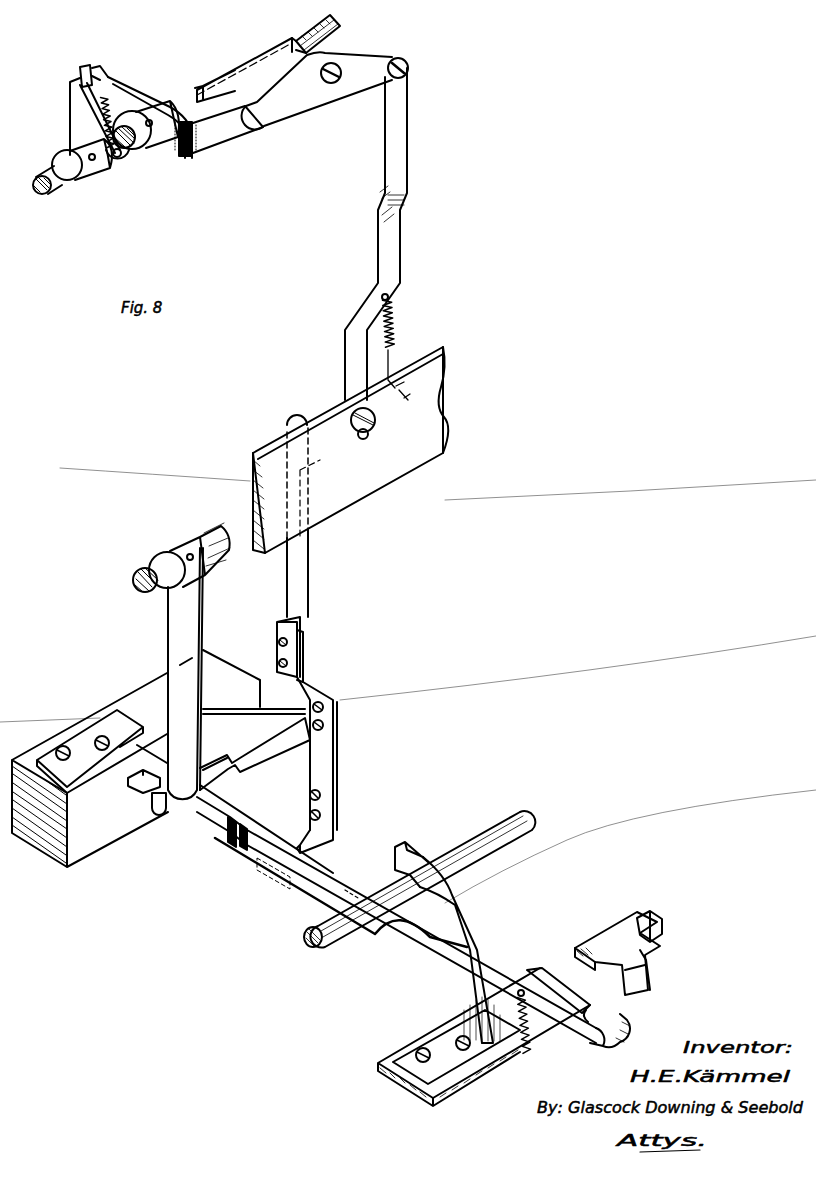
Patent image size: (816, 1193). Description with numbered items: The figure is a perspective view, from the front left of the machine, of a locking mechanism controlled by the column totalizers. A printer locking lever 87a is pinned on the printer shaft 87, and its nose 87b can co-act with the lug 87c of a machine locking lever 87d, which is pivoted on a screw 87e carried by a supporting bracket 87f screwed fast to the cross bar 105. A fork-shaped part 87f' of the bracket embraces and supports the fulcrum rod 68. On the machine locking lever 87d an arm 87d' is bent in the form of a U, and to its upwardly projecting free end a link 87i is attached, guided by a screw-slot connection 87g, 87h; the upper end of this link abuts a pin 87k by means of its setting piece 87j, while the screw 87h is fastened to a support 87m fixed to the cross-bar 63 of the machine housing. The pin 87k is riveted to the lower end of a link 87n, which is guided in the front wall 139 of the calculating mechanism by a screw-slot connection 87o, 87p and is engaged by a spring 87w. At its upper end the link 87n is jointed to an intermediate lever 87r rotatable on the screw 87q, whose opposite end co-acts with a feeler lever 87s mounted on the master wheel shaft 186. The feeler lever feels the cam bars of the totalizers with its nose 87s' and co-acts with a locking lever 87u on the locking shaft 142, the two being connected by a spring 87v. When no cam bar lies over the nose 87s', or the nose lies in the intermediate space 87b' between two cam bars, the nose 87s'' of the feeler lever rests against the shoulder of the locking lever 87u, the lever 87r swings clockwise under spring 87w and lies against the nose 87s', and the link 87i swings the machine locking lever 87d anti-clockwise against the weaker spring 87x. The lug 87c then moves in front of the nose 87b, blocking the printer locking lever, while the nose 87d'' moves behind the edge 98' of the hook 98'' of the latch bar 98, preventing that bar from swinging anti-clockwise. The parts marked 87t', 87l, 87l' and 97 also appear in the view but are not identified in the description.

The locking shaft 142 is at (60, 190).
The locking lever 87u is at (78, 143).
The tab 87t' is at (74, 58).
The nose of the feeler lever 87s'' is at (101, 58).
The spring 87v is at (113, 116).
The master wheel shaft 186 is at (130, 149).
The feeler lever 87s is at (180, 161).
The intermediate lever 87r is at (260, 119).
The nose of the feeler lever 87s' is at (243, 64).
The knob 87l is at (350, 34).
The knob base 87l' is at (340, 43).
The intermediate space 87b' is at (317, 104).
The screw 87q is at (333, 83).
The link 87n is at (398, 238).
The spring 87w is at (393, 334).
The front wall of the calculating mechanism 139 is at (437, 388).
The screw-slot connection 87p is at (376, 420).
The screw-slot connection 87o is at (368, 434).
The printer shaft 87 is at (140, 570).
The printer locking lever 87a is at (186, 623).
The pin 87k is at (303, 618).
The setting piece 87j is at (304, 649).
The link 87i is at (329, 689).
The screw-slot connection 87g is at (324, 706).
The screw 87h is at (324, 727).
The support 87m is at (250, 736).
The cross-bar of the machine housing 63 is at (83, 845).
The lug 87c is at (143, 793).
The nose 87b is at (171, 854).
The machine locking lever 87d is at (396, 920).
The arm 87d' is at (395, 903).
The nose of the machine locking lever 87d'' is at (610, 1018).
The screw 87e is at (393, 880).
The fulcrum rod 68 is at (527, 812).
The supporting bracket 87f is at (474, 950).
The fork-shaped part 87f' is at (435, 832).
The cross bar 105 is at (468, 1082).
The spring 87x is at (530, 1055).
The latch bar 98 is at (617, 925).
The tab 97 is at (648, 920).
The hook 98'' is at (671, 965).
The edge 98' is at (611, 976).